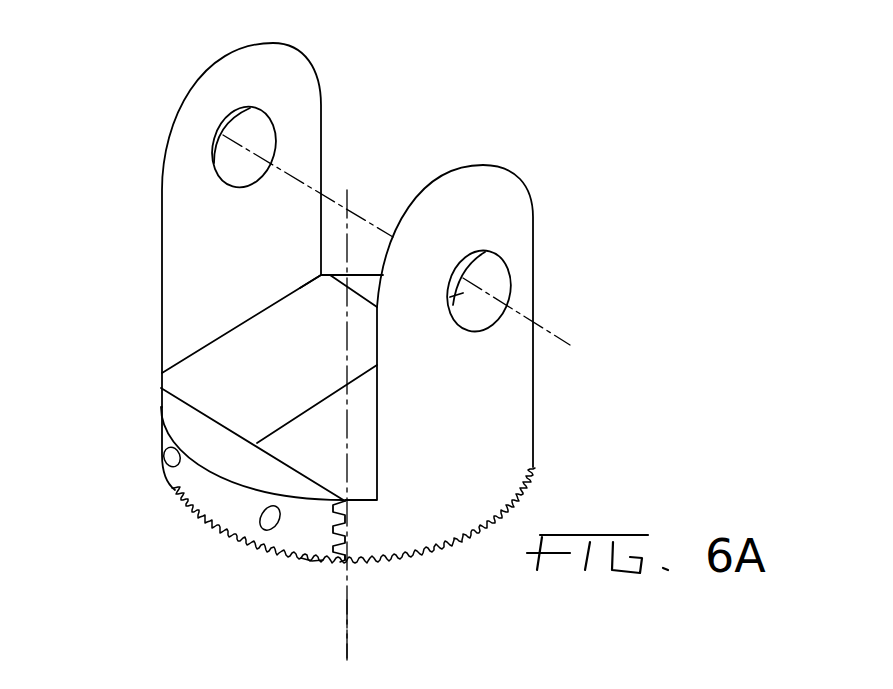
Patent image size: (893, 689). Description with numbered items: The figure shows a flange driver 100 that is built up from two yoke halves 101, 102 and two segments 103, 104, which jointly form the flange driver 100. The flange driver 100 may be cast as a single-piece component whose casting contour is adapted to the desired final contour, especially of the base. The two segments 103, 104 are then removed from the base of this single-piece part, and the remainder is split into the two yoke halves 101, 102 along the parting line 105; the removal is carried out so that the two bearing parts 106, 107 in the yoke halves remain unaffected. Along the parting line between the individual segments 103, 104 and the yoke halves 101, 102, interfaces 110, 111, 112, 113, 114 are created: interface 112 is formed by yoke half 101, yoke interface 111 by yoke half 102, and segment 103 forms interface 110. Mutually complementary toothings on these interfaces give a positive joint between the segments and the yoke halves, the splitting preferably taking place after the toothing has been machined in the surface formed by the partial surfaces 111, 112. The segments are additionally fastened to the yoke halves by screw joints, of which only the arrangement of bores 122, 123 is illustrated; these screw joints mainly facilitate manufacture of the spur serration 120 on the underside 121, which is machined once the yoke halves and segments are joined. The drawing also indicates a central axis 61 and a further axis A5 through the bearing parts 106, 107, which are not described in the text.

The flange driver 100 is at (433, 95).
The yoke half 101 is at (313, 50).
The yoke half 102 is at (512, 165).
The segment 103 is at (183, 420).
The segment 104 is at (357, 275).
The parting line 105 is at (317, 405).
The bearing part 106 is at (520, 232).
The bearing part 107 is at (189, 148).
The interface 110 is at (347, 543).
The interface 111 is at (322, 512).
The interface 112 is at (213, 428).
The interface 113 is at (330, 277).
The interface 114 is at (368, 291).
The spur serration 120 is at (231, 534).
The underside 121 is at (312, 565).
The bore 122 is at (167, 457).
The bore 123 is at (266, 525).
The axis of rotation 61 is at (348, 640).
The pivot axis A5 is at (563, 332).